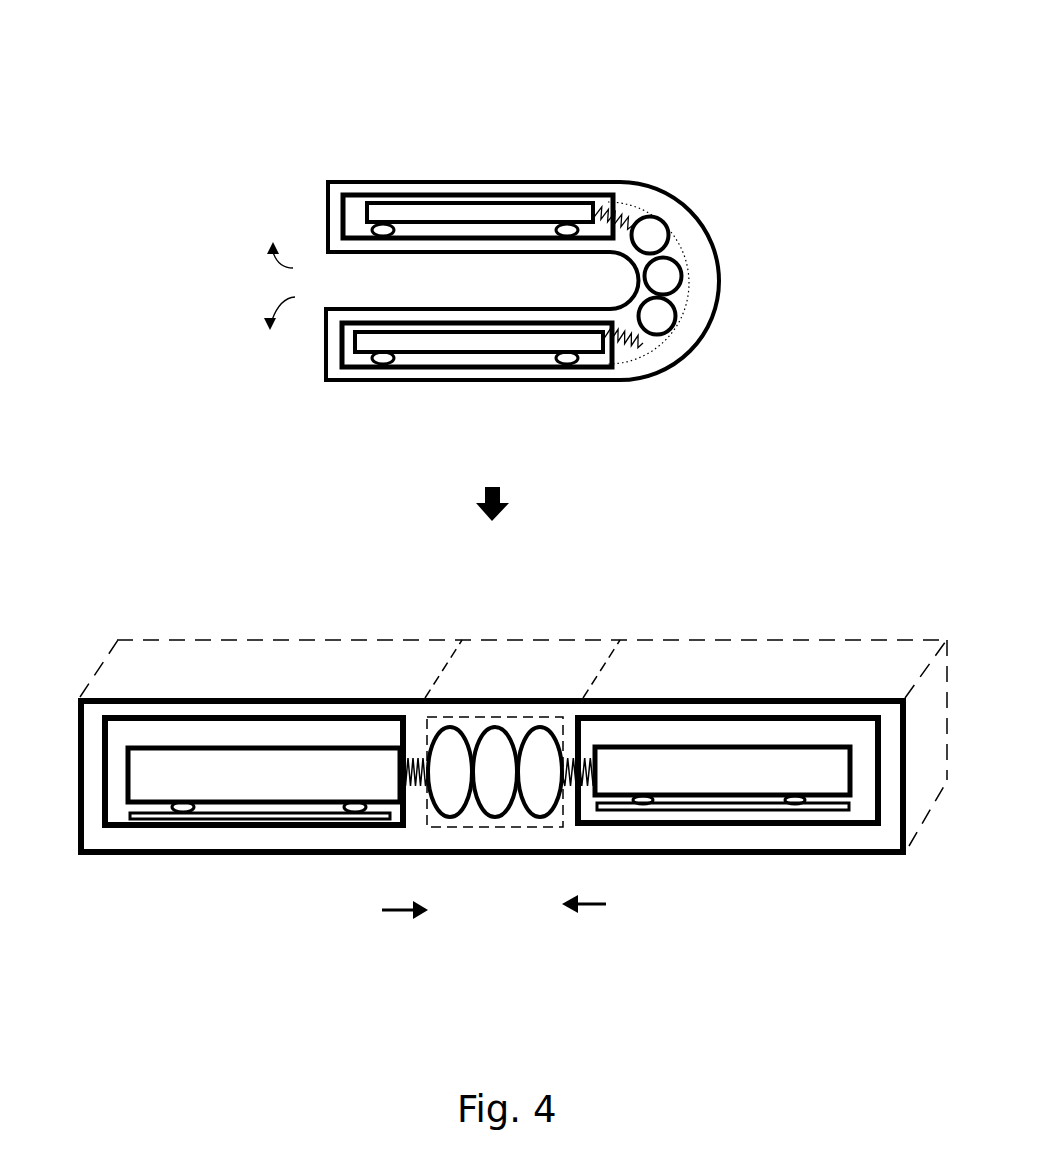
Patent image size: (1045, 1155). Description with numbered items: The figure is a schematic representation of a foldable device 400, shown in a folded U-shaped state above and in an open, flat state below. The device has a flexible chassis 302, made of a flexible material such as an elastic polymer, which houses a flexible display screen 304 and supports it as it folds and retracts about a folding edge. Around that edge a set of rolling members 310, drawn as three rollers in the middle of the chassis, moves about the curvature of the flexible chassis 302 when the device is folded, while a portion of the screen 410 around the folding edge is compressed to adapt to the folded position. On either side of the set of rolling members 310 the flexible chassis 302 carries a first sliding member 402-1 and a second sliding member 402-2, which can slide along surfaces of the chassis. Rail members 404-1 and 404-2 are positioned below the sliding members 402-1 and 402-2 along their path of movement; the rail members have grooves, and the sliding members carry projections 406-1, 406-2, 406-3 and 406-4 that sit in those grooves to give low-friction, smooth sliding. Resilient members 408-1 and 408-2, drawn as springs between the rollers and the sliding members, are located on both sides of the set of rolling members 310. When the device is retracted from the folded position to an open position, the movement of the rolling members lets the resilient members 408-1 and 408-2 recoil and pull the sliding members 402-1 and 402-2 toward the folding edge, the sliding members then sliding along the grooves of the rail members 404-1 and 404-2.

The foldable device 400 is at (245, 46).
The flexible chassis 302 is at (507, 182).
The flexible display screen 304 is at (637, 718).
The set of rolling members 310 is at (473, 827).
The portion of the screen 410 is at (514, 652).
The resilient member 408-1 is at (585, 750).
The resilient member 408-2 is at (425, 757).
The first sliding member 402-1 is at (727, 747).
The second sliding member 402-2 is at (213, 748).
The rail member 404-1 is at (848, 808).
The rail member 404-2 is at (130, 825).
The projection 406-1 is at (795, 805).
The projection 406-2 is at (643, 800).
The projection 406-3 is at (355, 812).
The projection 406-4 is at (183, 812).